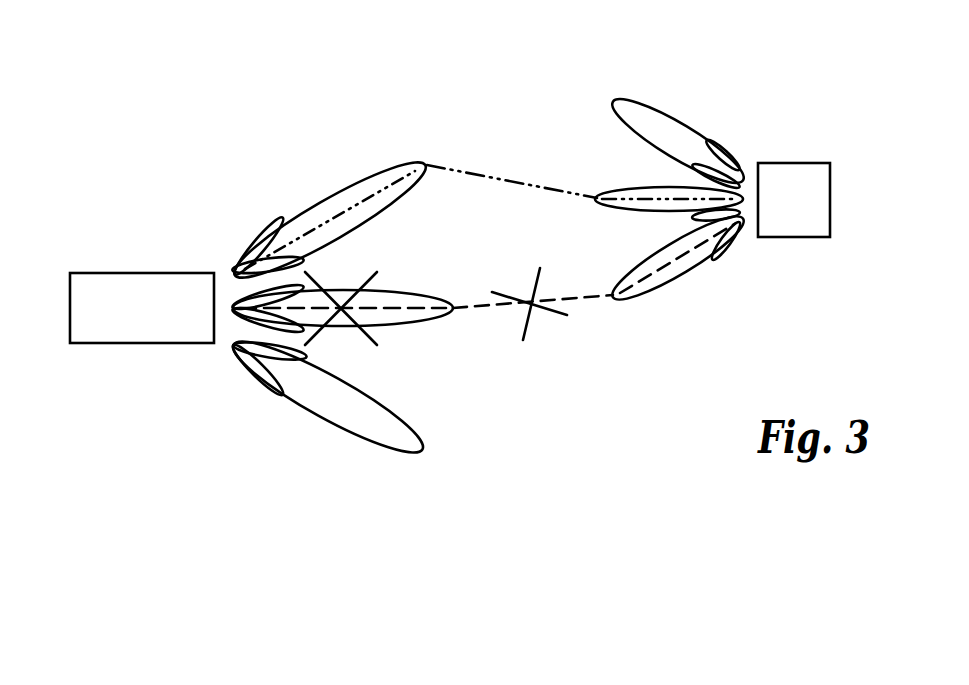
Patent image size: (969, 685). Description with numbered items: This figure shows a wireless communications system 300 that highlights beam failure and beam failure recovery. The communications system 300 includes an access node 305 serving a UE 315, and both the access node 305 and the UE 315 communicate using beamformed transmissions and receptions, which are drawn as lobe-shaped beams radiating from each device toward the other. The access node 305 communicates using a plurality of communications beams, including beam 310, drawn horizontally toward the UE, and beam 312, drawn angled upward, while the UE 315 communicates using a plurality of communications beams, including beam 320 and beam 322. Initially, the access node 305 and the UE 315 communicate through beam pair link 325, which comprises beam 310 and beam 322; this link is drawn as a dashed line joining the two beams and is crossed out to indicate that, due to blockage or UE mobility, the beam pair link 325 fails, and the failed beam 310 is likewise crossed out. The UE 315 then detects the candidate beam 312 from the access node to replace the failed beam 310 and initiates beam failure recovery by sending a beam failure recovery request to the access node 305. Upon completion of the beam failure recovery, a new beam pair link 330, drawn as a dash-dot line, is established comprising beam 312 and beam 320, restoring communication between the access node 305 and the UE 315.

The wireless communications system 300 is at (761, 42).
The access node 305 is at (88, 272).
The beam 310 is at (377, 288).
The beam 312 is at (380, 172).
The UE 315 is at (813, 163).
The beam 320 is at (635, 190).
The beam 322 is at (648, 285).
The beam pair link (BPL) 325 is at (472, 307).
The beam pair link (BPL) 330 is at (488, 177).